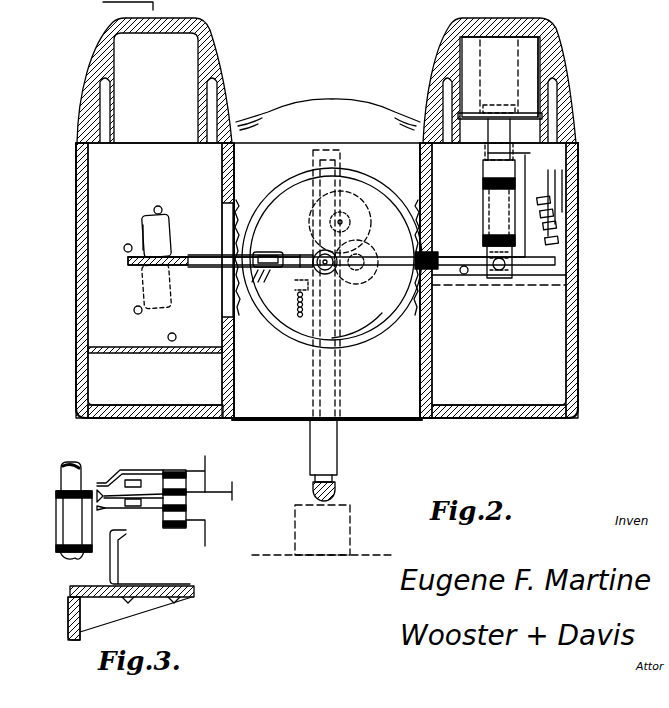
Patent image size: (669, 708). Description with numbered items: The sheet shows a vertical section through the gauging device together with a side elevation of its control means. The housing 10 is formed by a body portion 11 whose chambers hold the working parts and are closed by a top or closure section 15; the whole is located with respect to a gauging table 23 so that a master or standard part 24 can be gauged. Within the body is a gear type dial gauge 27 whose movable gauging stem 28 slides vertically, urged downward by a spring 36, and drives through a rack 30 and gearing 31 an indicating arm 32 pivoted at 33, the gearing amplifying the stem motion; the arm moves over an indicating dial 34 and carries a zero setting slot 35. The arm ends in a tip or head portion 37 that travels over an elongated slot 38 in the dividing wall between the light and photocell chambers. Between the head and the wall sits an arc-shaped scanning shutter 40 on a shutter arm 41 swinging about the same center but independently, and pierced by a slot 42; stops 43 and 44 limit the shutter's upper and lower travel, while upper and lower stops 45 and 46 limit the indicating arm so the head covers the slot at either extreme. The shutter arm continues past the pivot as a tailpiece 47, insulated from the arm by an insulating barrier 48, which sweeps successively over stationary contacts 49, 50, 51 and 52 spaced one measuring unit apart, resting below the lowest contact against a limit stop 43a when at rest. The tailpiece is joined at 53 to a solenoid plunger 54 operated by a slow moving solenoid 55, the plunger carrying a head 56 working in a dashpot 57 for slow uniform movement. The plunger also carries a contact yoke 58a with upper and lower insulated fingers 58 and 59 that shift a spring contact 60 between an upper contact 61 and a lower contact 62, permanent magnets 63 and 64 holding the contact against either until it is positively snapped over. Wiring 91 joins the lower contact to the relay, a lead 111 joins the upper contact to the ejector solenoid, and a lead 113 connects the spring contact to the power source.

In FIG. 2, the housing 10 is at (585, 287).
In FIG. 2, the body portion 11 is at (580, 360).
In FIG. 2, the top or closure section 15 is at (346, 100).
In FIG. 2, the gauging table or support 23 is at (380, 553).
In FIG. 2, the master or standard part 24 is at (350, 525).
In FIG. 2, the gear type dial gauge 27 is at (383, 343).
In FIG. 2, the movable gauging stem 28 is at (337, 478).
In FIG. 2, the rack 30 is at (348, 196).
In FIG. 2, the gearing 31 is at (372, 225).
In FIG. 2, the indicating arm 32 is at (296, 262).
In FIG. 2, the pivot 33 is at (335, 272).
In FIG. 2, the indicating dial 34 is at (293, 283).
In FIG. 2, the zero setting slot 35 is at (270, 252).
In FIG. 2, the spring 36 is at (296, 320).
In FIG. 2, the tip or head portion 37 is at (135, 264).
In FIG. 2, the elongated slot 38 is at (142, 292).
In FIG. 2, the scanning shutter 40 is at (170, 233).
In FIG. 2, the shutter arm 41 is at (190, 255).
In FIG. 2, the slot 42 is at (142, 236).
In FIG. 2, the stop 43 is at (162, 207).
In FIG. 2, the limit stop 43a is at (463, 275).
In FIG. 2, the stop 44 is at (176, 334).
In FIG. 2, the upper stop 45 is at (124, 248).
In FIG. 2, the lower stop 46 is at (138, 314).
In FIG. 2, the tailpiece 47 is at (542, 268).
In FIG. 2, the insulating barrier 48 is at (434, 252).
In FIG. 2, the stationary contact 49 is at (558, 240).
In FIG. 2, the stationary contact 50 is at (556, 226).
In FIG. 2, the stationary contact 51 is at (553, 213).
In FIG. 2, the stationary contact 52 is at (550, 200).
In FIG. 2, the connection 53 is at (500, 280).
In FIG. 2, the solenoid plunger 54 is at (521, 141).
In FIG. 2, the slow moving solenoid 55 is at (540, 78).
In FIG. 2, the head 56 is at (499, 103).
In FIG. 2, the dashpot 57 is at (520, 57).
In FIG. 2, the upper insulated finger 58 is at (483, 183).
In FIG. 3, the upper insulated finger 58 is at (86, 490).
In FIG. 2, the contact yoke 58a is at (483, 206).
In FIG. 3, the contact yoke 58a is at (56, 504).
In FIG. 2, the lower insulated finger 59 is at (483, 243).
In FIG. 3, the lower insulated finger 59 is at (74, 560).
In FIG. 3, the spring contact 60 is at (97, 500).
In FIG. 3, the upper contact 61 is at (112, 472).
In FIG. 3, the lower contact 62 is at (101, 512).
In FIG. 3, the permanent magnet 63 is at (140, 486).
In FIG. 3, the permanent magnet 64 is at (132, 510).
In FIG. 3, the wiring 91 is at (205, 535).
In FIG. 3, the lead 111 is at (232, 492).
In FIG. 3, the lead 113 is at (205, 458).